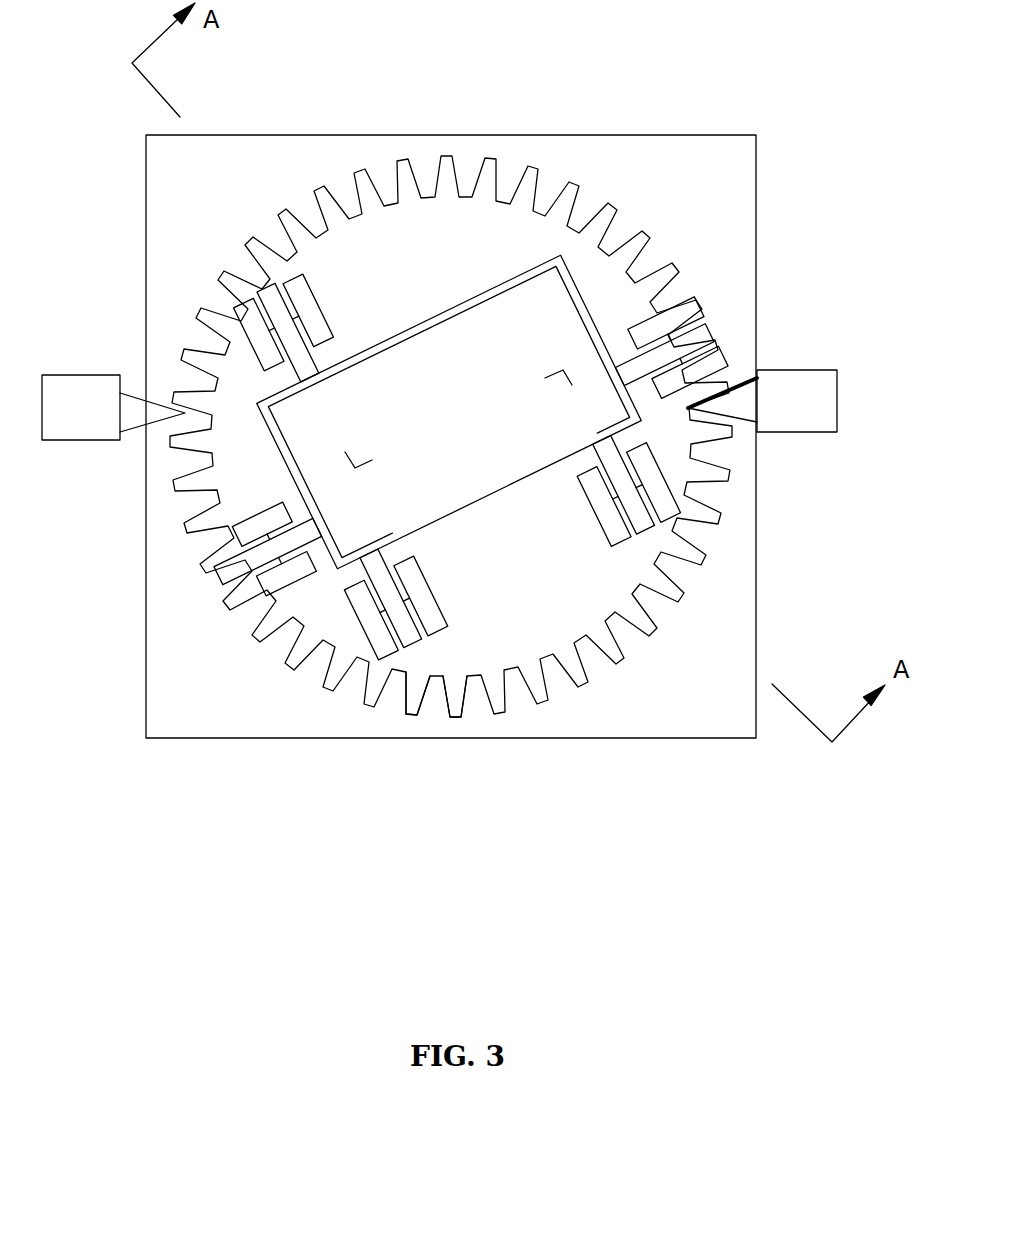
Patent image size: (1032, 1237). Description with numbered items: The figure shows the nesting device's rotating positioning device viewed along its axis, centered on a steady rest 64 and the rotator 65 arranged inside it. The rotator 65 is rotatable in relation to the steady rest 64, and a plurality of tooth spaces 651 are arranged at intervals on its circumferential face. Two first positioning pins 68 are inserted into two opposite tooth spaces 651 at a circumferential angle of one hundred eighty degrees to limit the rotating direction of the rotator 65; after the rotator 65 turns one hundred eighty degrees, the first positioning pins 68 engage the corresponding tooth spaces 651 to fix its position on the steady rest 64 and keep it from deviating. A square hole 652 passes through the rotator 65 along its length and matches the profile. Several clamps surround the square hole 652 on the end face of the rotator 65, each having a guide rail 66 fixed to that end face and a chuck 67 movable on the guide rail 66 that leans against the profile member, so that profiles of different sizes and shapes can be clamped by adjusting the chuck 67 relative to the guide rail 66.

The steady rest 64 is at (641, 172).
The rotator 65 is at (456, 225).
The tooth spaces 651 is at (441, 714).
The square hole 652 is at (483, 470).
The guide rail 66 is at (250, 300).
The chuck 67 is at (298, 356).
The first positioning pins 68 is at (150, 416).